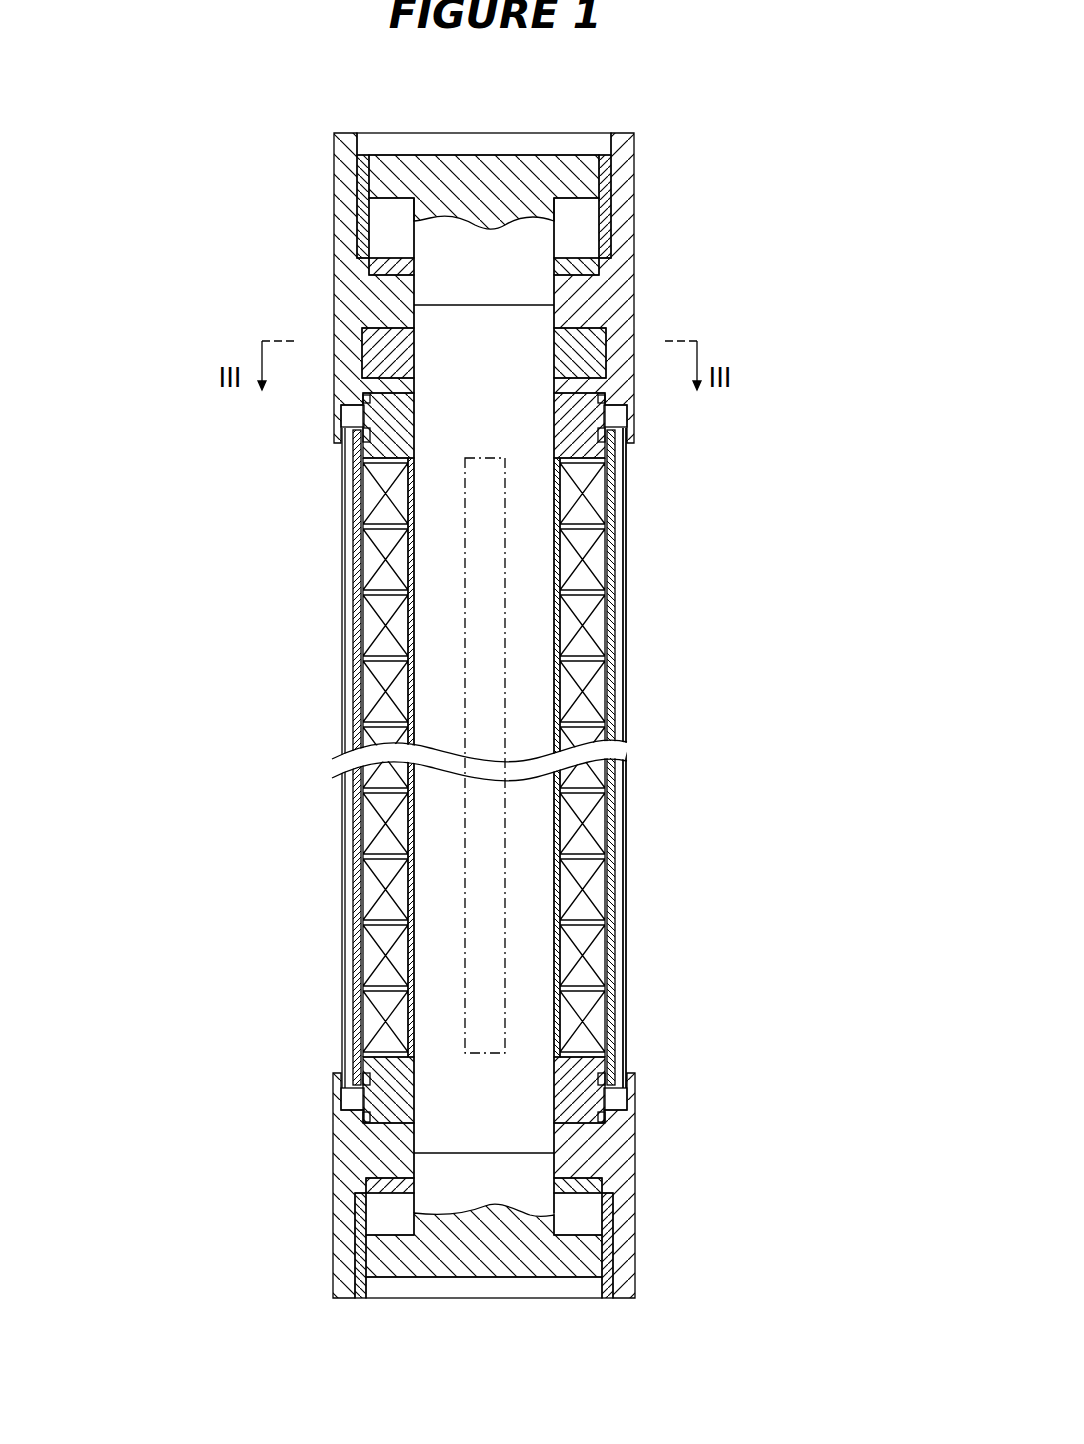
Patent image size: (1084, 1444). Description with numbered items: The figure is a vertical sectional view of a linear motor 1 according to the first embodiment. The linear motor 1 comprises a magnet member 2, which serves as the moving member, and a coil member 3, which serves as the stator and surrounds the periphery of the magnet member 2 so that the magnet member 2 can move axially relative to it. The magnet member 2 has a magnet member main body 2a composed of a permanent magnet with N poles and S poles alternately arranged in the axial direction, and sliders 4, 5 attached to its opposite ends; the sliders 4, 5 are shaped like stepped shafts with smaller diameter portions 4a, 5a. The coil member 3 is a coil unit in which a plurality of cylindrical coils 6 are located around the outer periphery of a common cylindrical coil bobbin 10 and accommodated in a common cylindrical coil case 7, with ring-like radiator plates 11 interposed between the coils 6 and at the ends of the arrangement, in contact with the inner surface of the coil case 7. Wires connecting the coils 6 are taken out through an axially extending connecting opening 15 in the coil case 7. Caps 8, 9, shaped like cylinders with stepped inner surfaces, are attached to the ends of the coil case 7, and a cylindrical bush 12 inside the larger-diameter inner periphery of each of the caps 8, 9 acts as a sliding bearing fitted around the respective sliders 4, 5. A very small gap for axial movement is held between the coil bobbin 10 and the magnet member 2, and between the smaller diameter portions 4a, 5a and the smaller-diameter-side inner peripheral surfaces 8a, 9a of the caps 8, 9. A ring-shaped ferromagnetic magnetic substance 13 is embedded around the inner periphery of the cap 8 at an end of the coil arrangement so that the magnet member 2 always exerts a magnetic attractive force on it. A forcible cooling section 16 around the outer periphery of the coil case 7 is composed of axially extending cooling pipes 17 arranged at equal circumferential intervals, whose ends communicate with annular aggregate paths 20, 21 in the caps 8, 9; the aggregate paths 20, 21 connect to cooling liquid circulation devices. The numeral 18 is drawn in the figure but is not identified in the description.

The linear motor 1 is at (660, 222).
The magnet member 2 is at (533, 692).
The magnet member main body 2a is at (527, 808).
The coil member 3 is at (638, 884).
The slider 4 is at (487, 176).
The smaller diameter portion 4a is at (535, 237).
The slider 5 is at (528, 1263).
The smaller diameter portion 5a is at (530, 1165).
The coil 6 is at (613, 543).
The coil case 7 is at (607, 535).
The cap 8 is at (333, 287).
The smaller-diameter-side inner peripheral surface 8a is at (535, 298).
The cap 9 is at (331, 1156).
The smaller-diameter-side inner peripheral surface 9a is at (545, 1140).
The coil bobbin 10 is at (573, 957).
The radiator plate 11 is at (383, 467).
The cylindrical bush 12 is at (363, 157).
The magnetic substance 13 is at (597, 337).
The connecting opening 15 is at (462, 826).
The forcible cooling section 16 is at (626, 841).
The cooling pipe 17 is at (345, 720).
The tube 18 is at (340, 678).
The aggregate path 20 is at (617, 418).
The aggregate path 21 is at (608, 1092).